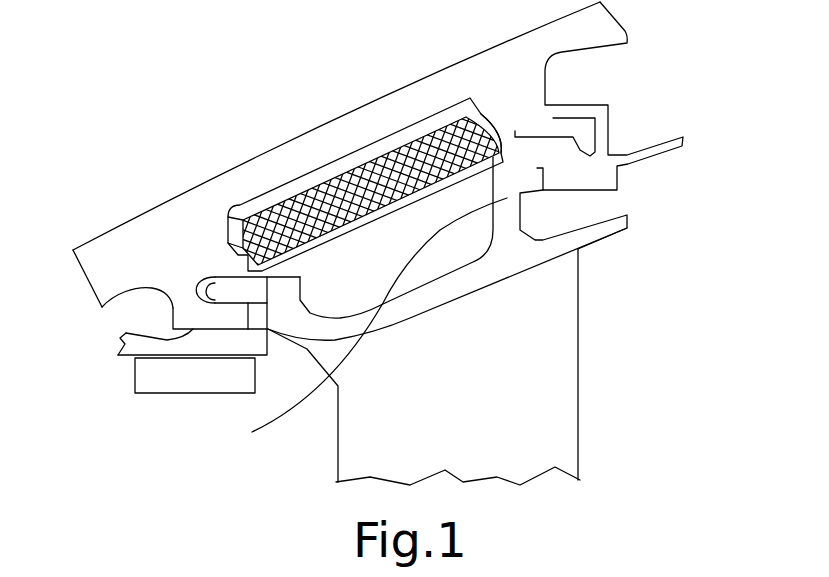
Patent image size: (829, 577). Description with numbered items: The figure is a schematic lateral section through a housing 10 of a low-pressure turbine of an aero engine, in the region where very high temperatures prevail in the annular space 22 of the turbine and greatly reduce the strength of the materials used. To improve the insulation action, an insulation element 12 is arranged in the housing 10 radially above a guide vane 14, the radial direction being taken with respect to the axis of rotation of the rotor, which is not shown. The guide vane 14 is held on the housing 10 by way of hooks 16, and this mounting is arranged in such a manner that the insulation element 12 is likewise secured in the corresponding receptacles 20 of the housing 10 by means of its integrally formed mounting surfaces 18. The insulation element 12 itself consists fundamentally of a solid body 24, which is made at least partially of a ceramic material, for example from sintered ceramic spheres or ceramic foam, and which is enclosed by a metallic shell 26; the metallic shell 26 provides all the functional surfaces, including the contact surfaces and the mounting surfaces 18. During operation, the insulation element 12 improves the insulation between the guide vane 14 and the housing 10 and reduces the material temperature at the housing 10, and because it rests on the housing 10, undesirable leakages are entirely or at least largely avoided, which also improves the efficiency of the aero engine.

The housing 10 is at (290, 153).
The insulation element 12 is at (483, 170).
The guide vane 14 is at (550, 383).
The hooks 16 is at (220, 346).
The mounting surfaces 18 is at (242, 224).
The receptacles 20 is at (193, 290).
The annular space 22 is at (657, 313).
The solid body 24 is at (372, 178).
The metallic shell 26 is at (353, 168).